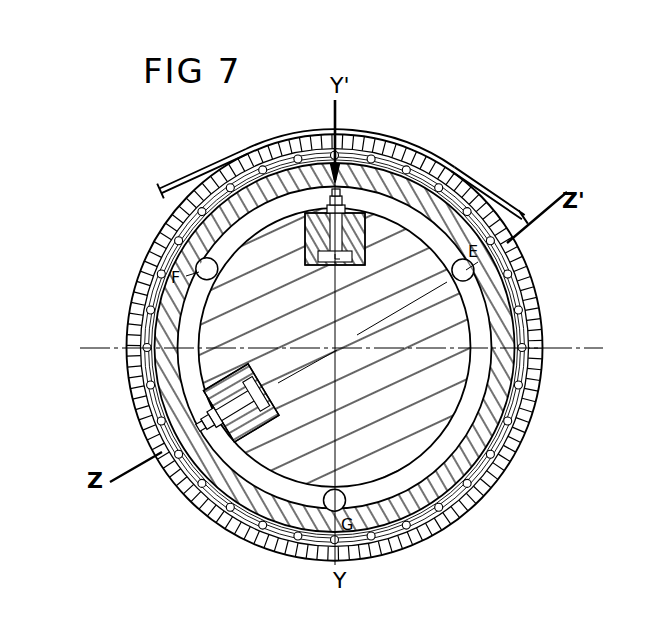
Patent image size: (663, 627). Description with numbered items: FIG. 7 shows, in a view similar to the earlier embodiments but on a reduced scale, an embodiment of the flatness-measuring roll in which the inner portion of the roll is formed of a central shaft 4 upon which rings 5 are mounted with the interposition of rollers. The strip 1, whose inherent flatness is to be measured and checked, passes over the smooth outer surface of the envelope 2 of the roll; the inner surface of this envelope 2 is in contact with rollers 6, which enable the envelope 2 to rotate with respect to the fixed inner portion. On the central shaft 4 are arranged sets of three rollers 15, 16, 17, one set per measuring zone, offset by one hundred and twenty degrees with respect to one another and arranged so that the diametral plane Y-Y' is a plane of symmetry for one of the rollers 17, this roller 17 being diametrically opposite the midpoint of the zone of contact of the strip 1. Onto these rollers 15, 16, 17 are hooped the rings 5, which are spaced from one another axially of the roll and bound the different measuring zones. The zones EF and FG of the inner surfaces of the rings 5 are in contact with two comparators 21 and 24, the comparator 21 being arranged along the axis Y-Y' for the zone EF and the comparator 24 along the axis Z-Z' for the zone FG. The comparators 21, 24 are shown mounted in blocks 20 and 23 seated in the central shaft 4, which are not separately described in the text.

The strip 1 is at (198, 186).
The envelope 2 is at (196, 260).
The central shaft 4 is at (404, 240).
The rings 5 is at (500, 388).
The rollers 6 is at (517, 293).
The roller 15 is at (500, 250).
The roller 16 is at (138, 268).
The roller 17 is at (322, 497).
The slider block 20 is at (310, 212).
The comparator 21 is at (341, 167).
The slider block 23 is at (212, 401).
The comparator 24 is at (199, 428).